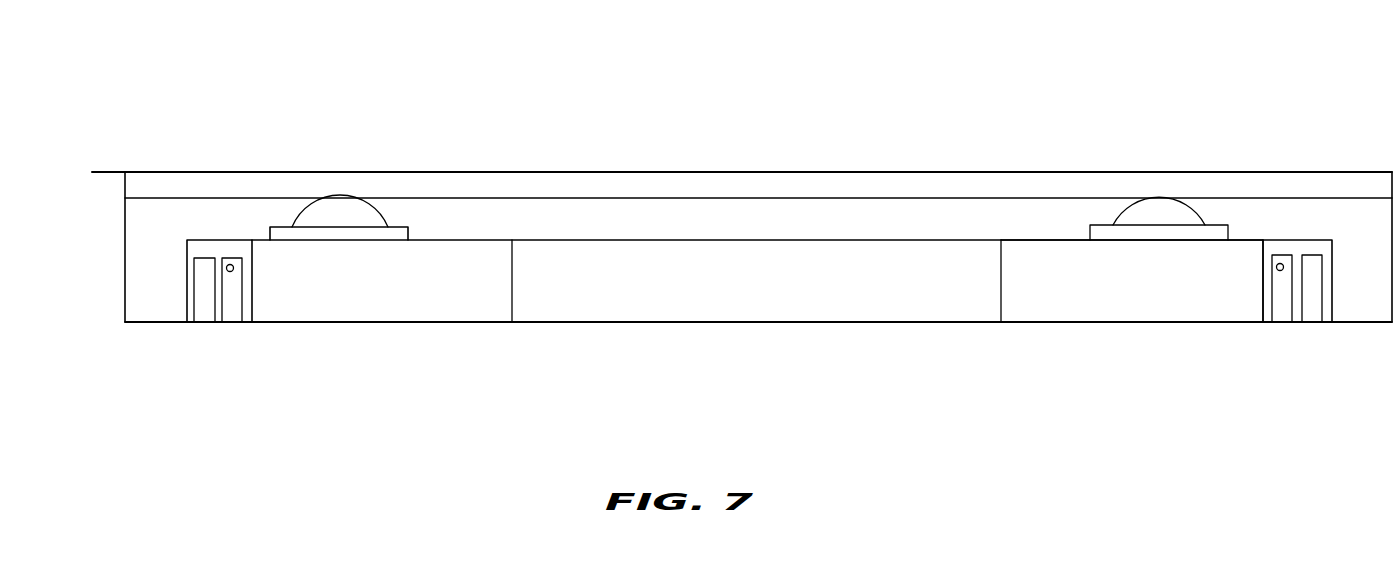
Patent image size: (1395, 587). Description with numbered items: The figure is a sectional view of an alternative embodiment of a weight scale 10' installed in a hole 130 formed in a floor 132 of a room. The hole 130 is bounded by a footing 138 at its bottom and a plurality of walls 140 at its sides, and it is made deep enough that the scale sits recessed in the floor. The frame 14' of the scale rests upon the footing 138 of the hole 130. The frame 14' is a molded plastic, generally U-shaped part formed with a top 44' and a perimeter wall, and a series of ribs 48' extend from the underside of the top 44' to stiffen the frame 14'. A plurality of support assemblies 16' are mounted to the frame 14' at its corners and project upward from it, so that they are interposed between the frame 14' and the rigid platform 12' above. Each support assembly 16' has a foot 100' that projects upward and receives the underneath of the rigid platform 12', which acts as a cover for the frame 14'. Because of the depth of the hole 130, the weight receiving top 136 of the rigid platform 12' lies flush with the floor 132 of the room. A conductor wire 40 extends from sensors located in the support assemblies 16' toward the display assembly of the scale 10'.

The floor 132 is at (115, 172).
The top 136 is at (252, 172).
The walls 140 is at (125, 253).
The hole 130 is at (137, 303).
The conductor wire 40 is at (230, 271).
The weight scale 10' is at (757, 228).
The frame 14' is at (1144, 230).
The support assemblies 16' is at (393, 182).
The foot 100' is at (392, 153).
The rigid platform 12' is at (680, 153).
The footing 138 is at (873, 322).
The top 44' is at (1320, 230).
The ribs 48' is at (1328, 308).